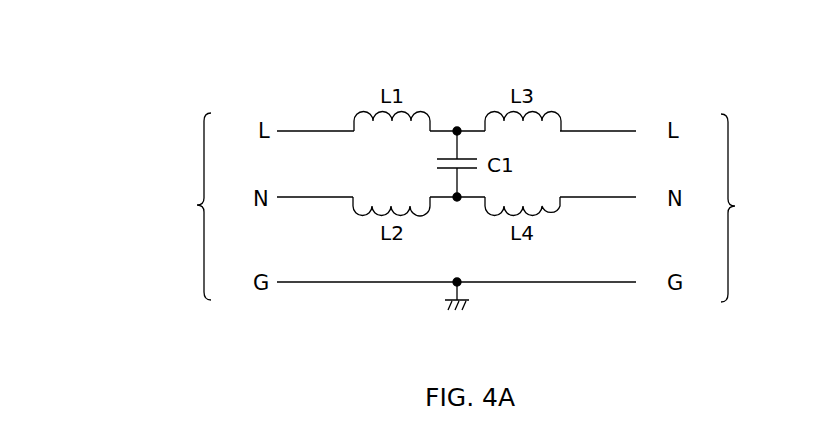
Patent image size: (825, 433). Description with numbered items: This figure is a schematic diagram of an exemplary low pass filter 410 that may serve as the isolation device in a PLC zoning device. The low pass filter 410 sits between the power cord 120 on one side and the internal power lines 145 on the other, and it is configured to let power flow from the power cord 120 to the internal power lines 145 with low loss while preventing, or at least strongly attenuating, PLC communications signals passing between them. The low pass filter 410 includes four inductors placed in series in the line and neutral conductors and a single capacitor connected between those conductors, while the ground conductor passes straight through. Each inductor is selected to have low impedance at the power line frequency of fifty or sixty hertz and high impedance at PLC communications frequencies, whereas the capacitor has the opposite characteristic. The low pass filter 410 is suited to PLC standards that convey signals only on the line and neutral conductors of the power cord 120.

The low pass filter 410 is at (176, 50).
The power cord 120 is at (177, 206).
The internal power lines 145 is at (758, 208).